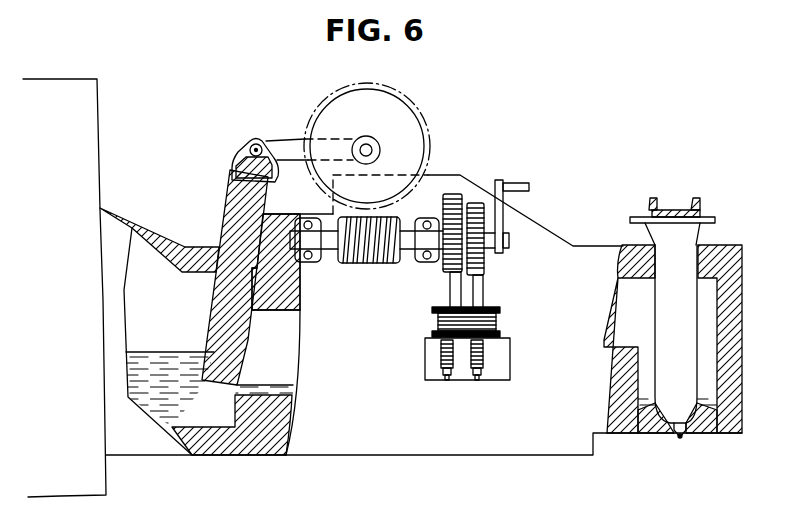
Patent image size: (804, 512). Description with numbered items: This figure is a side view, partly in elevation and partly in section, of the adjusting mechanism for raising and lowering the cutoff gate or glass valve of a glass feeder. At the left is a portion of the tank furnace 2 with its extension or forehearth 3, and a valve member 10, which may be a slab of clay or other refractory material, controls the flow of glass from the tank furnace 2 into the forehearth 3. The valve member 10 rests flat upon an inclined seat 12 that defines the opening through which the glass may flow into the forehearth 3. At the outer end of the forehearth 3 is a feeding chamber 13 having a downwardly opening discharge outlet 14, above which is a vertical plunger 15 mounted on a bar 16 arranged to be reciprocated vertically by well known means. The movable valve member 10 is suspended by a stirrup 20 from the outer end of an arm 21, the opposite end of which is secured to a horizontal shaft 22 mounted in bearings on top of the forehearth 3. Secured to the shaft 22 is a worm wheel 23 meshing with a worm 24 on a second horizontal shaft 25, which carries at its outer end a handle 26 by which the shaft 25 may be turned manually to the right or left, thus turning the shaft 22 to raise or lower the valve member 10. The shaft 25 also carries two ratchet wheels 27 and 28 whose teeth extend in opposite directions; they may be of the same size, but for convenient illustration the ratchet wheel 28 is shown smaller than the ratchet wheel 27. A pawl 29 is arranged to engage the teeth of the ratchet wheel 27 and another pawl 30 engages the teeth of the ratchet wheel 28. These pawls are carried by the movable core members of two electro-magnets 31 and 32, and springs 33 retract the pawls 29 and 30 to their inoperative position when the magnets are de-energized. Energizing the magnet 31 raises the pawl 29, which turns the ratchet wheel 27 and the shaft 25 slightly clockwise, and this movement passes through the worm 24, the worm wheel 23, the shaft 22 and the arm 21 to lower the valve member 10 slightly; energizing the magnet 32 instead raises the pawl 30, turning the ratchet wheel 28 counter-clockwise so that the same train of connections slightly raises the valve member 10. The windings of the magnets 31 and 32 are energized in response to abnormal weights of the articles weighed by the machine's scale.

The tank furnace 2 is at (85, 138).
The forehearth 3 is at (358, 438).
The valve member 10 is at (215, 296).
The inclined seat 12 is at (239, 332).
The feeding chamber 13 is at (710, 342).
The discharge outlet 14 is at (688, 440).
The plunger 15 is at (663, 308).
The bar 16 is at (668, 212).
The stirrup 20 is at (240, 150).
The arm 21 is at (287, 144).
The horizontal shaft 22 is at (367, 147).
The worm wheel 23 is at (366, 95).
The worm 24 is at (367, 263).
The horizontal shaft 25 is at (509, 240).
The handle 26 is at (515, 188).
The ratchet wheel 27 is at (452, 196).
The ratchet wheel 28 is at (474, 205).
The pawl 29 is at (450, 293).
The pawl 30 is at (484, 290).
The electro-magnet 31 is at (438, 321).
The electro-magnet 32 is at (500, 318).
The springs 33 is at (441, 357).